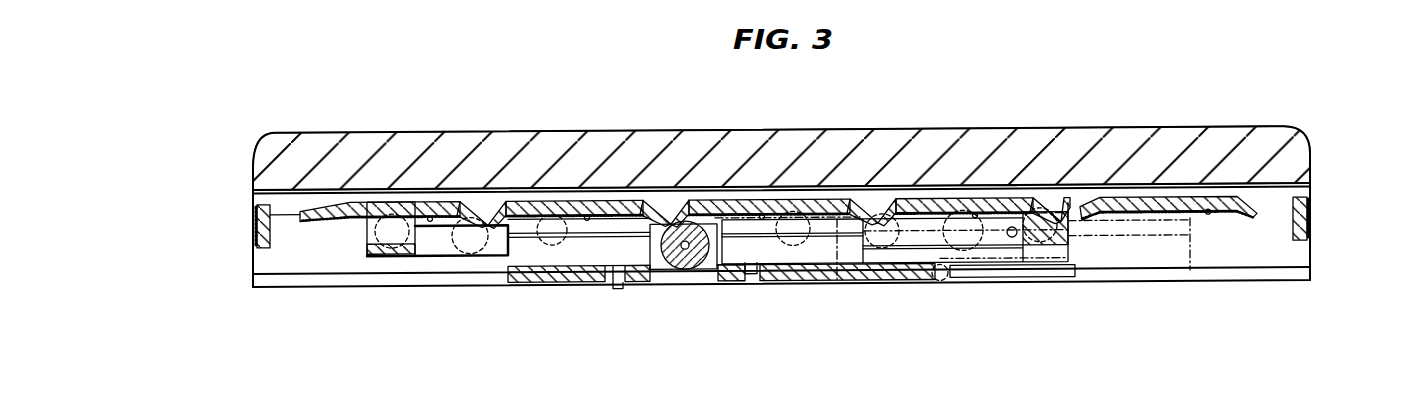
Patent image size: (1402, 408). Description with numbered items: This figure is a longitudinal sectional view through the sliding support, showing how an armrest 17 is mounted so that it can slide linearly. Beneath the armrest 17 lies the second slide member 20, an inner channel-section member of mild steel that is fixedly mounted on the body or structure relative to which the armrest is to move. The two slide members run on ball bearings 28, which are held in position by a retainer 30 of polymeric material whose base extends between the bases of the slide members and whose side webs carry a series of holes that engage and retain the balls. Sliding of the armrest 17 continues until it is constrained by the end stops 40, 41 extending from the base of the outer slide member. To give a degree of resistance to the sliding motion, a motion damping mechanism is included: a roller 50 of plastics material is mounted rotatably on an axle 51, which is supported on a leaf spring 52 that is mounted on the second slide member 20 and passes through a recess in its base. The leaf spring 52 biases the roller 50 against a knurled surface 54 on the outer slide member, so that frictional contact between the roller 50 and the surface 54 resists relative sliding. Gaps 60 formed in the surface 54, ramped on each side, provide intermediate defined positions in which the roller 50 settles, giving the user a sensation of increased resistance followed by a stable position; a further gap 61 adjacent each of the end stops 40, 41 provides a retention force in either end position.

The armrest 17 is at (1130, 145).
The second slide member 20 is at (525, 266).
The ball bearings 28 is at (397, 234).
The retainer 30 is at (430, 252).
The end stop 40 is at (1311, 220).
The end stop 41 is at (258, 228).
The roller 50 is at (687, 275).
The axle 51 is at (683, 246).
The leaf spring 52 is at (662, 273).
The knurled surface 54 is at (430, 218).
The gaps 60 is at (487, 225).
The gap 61 is at (287, 225).